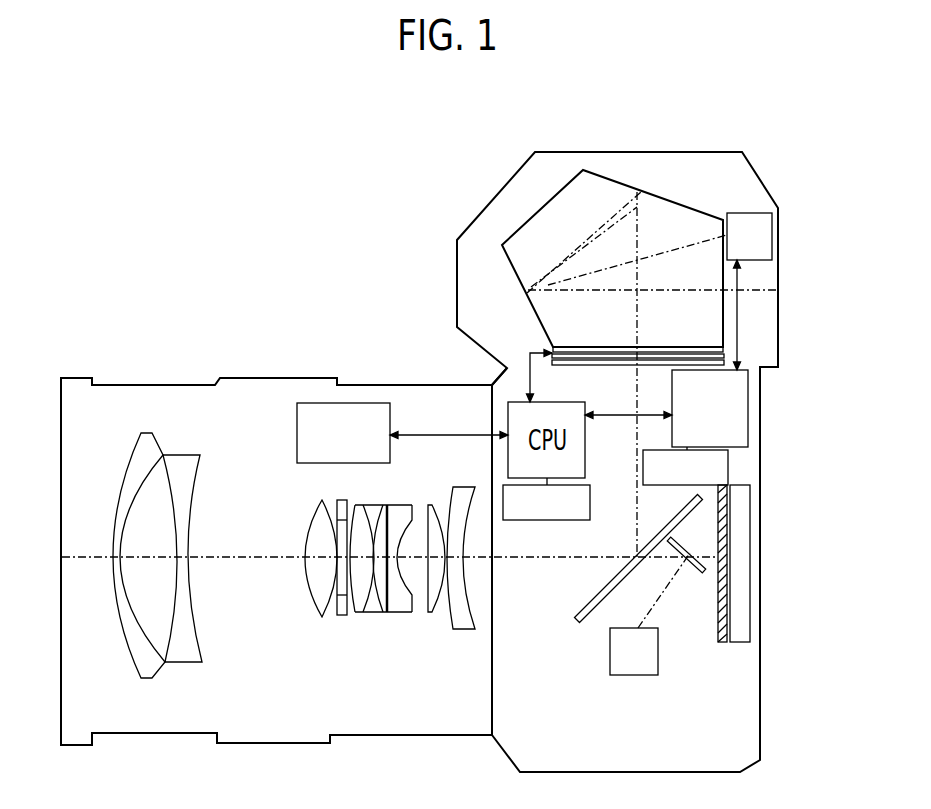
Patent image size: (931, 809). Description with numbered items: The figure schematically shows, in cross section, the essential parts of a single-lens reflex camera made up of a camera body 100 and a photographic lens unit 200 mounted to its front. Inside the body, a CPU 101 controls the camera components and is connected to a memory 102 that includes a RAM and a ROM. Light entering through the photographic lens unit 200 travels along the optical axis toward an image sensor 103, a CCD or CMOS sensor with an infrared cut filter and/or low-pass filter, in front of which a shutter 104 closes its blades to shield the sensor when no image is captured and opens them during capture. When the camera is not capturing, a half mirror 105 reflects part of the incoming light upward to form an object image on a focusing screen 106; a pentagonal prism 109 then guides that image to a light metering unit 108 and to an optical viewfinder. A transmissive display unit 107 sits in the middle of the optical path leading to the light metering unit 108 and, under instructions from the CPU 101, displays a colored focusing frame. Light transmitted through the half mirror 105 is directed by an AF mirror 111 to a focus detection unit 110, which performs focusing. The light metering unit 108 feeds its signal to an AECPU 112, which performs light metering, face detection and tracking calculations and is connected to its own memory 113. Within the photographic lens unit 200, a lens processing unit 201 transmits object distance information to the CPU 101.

The camera body 100 is at (750, 732).
The central processing unit (CPU) 101 is at (503, 410).
The memory 102 is at (543, 521).
The image sensor 103 is at (750, 627).
The shutter 104 is at (728, 520).
The half mirror 105 is at (583, 622).
The focusing screen 106 is at (722, 357).
The display unit 107 is at (690, 352).
The light metering unit 108 is at (737, 212).
The pentagonal prism 109 is at (533, 223).
The focus detection unit 110 is at (633, 676).
The AF mirror 111 is at (688, 570).
The automatic exposure CPU (AECPU) 112 is at (750, 410).
The memory 113 is at (730, 467).
The photographic lens unit 200 is at (83, 398).
The lens processing unit (LPU) 201 is at (363, 403).